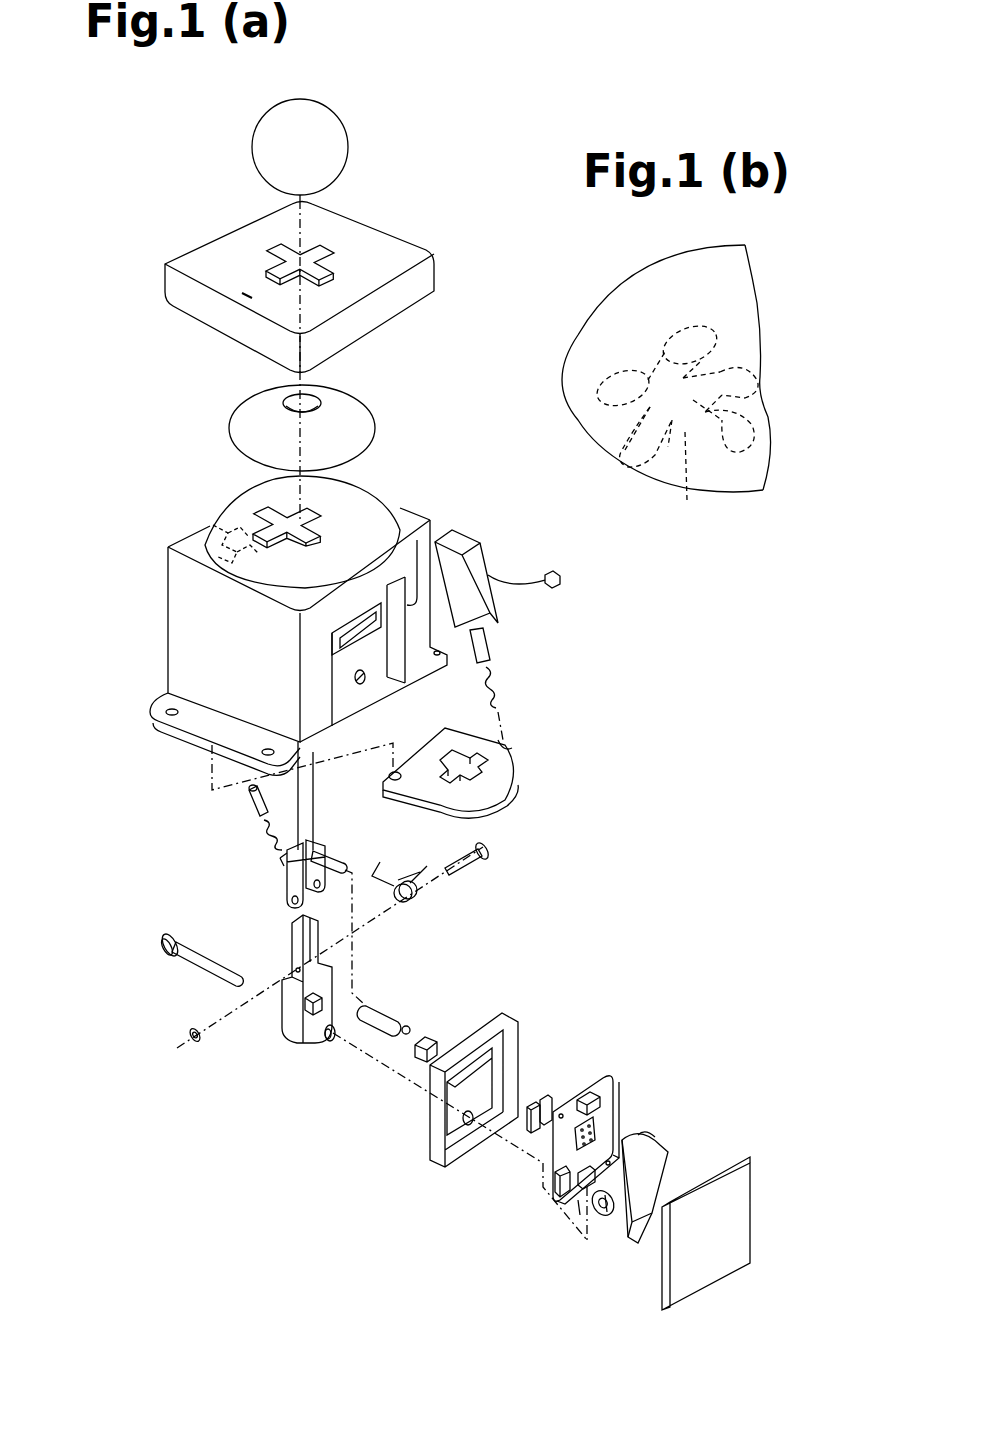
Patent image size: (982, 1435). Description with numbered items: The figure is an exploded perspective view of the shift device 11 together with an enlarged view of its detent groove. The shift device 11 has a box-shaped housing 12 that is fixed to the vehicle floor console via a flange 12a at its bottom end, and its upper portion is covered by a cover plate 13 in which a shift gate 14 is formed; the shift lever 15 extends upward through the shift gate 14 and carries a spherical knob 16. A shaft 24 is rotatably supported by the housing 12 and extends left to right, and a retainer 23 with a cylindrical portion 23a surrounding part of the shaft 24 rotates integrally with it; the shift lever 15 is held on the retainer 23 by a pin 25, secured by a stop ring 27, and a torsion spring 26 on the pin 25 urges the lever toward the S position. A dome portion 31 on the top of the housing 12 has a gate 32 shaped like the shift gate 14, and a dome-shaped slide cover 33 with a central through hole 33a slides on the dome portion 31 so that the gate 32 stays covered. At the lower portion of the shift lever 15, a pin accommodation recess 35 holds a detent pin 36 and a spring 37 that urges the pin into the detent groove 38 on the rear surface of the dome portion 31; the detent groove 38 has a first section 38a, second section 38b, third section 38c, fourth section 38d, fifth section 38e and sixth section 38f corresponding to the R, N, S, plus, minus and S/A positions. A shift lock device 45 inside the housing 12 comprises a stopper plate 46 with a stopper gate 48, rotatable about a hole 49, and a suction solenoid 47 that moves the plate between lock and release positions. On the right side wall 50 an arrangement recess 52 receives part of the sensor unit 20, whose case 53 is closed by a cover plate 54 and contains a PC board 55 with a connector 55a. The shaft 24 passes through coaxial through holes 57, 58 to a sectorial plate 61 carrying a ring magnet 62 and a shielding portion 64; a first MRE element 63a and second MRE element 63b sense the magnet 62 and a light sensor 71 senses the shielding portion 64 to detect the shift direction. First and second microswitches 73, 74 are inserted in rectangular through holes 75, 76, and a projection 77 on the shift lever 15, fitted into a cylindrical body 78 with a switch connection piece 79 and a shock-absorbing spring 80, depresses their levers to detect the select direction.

In FIG. 1A, the shift device 11 is at (127, 210).
In FIG. 1A, the housing 12 is at (165, 580).
In FIG. 1A, the flange 12a is at (200, 742).
In FIG. 1A, the cover plate 13 is at (168, 291).
In FIG. 1A, the shift gate 14 is at (268, 255).
In FIG. 1A, the shift lever 15 is at (316, 803).
In FIG. 1A, the knob 16 is at (255, 129).
In FIG. 1A, the sensor unit 20 is at (630, 1033).
In FIG. 1A, the retainer 23 is at (294, 1040).
In FIG. 1A, the cylindrical portion 23a is at (332, 1045).
In FIG. 1A, the shaft 24 is at (180, 964).
In FIG. 1A, the pin 25 is at (478, 866).
In FIG. 1A, the torsion spring 26 is at (418, 900).
In FIG. 1A, the stop ring 27 is at (190, 1032).
In FIG. 1A, the dome portion 31 is at (388, 512).
In FIG. 1B, the dome portion 31 is at (642, 272).
In FIG. 1A, the gate 32 is at (268, 500).
In FIG. 1A, the slide cover 33 is at (242, 416).
In FIG. 1A, the through hole 33a is at (322, 406).
In FIG. 1A, the pin accommodation recess 35 is at (280, 870).
In FIG. 1A, the detent pin 36 is at (248, 803).
In FIG. 1A, the spring 37 is at (266, 838).
In FIG. 1A, the detent groove 38 is at (215, 531).
In FIG. 1B, the detent groove 38 is at (643, 352).
In FIG. 1B, the first section 38a is at (700, 330).
In FIG. 1B, the second section 38b is at (598, 395).
In FIG. 1B, the third section 38c is at (687, 500).
In FIG. 1B, the fourth section 38d is at (760, 380).
In FIG. 1B, the fifth section 38e is at (632, 468).
In FIG. 1B, the sixth section 38f is at (762, 438).
In FIG. 1A, the shift lock device 45 is at (543, 748).
In FIG. 1A, the stopper plate 46 is at (498, 800).
In FIG. 1A, the suction solenoid 47 is at (497, 605).
In FIG. 1A, the stopper gate 48 is at (492, 783).
In FIG. 1A, the hole 49 is at (398, 781).
In FIG. 1A, the right side wall 50 is at (385, 685).
In FIG. 1A, the arrangement recess 52 is at (417, 600).
In FIG. 1A, the case 53 is at (508, 1020).
In FIG. 1A, the cover plate 54 is at (738, 1165).
In FIG. 1A, the PC board 55 is at (613, 1108).
In FIG. 1A, the connector 55a is at (552, 1192).
In FIG. 1A, the through hole 57 is at (353, 685).
In FIG. 1A, the through hole 58 is at (466, 1125).
In FIG. 1A, the sectorial plate 61 is at (658, 1187).
In FIG. 1A, the magnet 62 is at (607, 1217).
In FIG. 1A, the first MRE element 63a is at (580, 1210).
In FIG. 1A, the second MRE element 63b is at (598, 1130).
In FIG. 1A, the shielding portion 64 is at (652, 1136).
In FIG. 1A, the light sensor 71 is at (588, 1098).
In FIG. 1A, the first microswitch 73 is at (548, 1103).
In FIG. 1A, the second microswitch 74 is at (540, 1108).
In FIG. 1A, the through hole 75 is at (476, 1060).
In FIG. 1A, the through hole 76 is at (334, 642).
In FIG. 1A, the projection 77 is at (340, 866).
In FIG. 1A, the cylindrical body 78 is at (385, 1005).
In FIG. 1A, the switch connection piece 79 is at (430, 1037).
In FIG. 1A, the spring 80 is at (407, 1027).